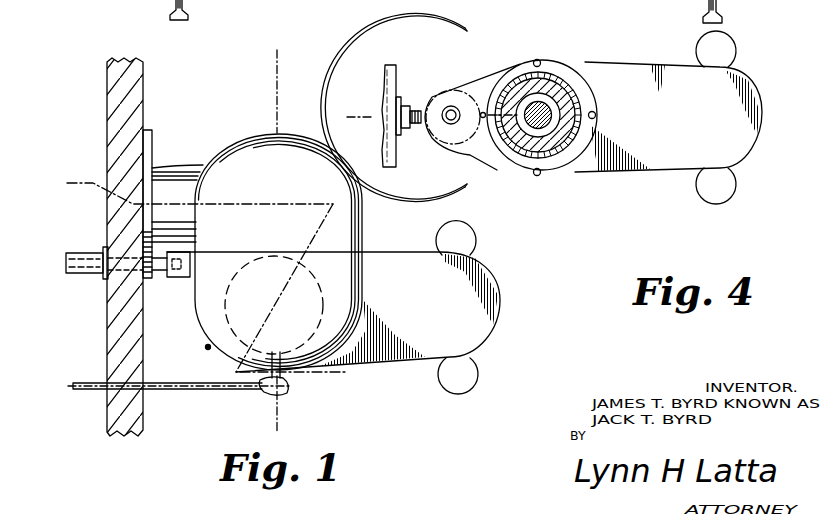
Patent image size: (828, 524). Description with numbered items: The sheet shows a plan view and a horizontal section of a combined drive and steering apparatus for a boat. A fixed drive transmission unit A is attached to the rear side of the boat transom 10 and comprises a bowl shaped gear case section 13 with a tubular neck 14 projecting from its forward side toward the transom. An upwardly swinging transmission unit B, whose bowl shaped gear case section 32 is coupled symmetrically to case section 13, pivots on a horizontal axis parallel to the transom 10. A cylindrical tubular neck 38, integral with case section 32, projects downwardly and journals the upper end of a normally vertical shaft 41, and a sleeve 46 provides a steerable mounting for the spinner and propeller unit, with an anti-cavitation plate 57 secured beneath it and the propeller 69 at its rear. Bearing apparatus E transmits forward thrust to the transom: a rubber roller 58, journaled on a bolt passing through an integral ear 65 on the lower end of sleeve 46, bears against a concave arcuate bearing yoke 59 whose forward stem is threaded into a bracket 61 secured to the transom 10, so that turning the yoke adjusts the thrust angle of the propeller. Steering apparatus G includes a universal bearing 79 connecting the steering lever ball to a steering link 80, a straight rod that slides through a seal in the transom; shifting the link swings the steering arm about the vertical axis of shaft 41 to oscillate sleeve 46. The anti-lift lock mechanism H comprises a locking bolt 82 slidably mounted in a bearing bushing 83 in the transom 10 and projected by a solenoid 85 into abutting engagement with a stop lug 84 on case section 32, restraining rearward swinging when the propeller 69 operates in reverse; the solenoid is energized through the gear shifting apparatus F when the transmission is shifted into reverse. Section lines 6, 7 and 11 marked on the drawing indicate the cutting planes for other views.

In FIG. 1, the boat transom 10 is at (139, 88).
In FIG. 4, the boat transom 10 is at (383, 79).
In FIG. 1, the section line 11- 11 is at (300, 77).
In FIG. 1, the section line 6- 6 is at (80, 190).
In FIG. 4, the section line 7- 7 is at (358, 93).
In FIG. 1, the gear case section 13 is at (362, 222).
In FIG. 1, the tubular neck 14 is at (177, 171).
In FIG. 1, the gear case section 32 is at (362, 296).
In FIG. 1, the anti-cavitation plate 57 is at (428, 358).
In FIG. 4, the anti-cavitation plate 57 is at (634, 66).
In FIG. 1, the propeller 69 is at (476, 243).
In FIG. 4, the propeller 69 is at (727, 52).
In FIG. 1, the universal bearing 79 is at (282, 396).
In FIG. 1, the steering link 80 is at (199, 390).
In FIG. 1, the locking bolt 82 is at (152, 282).
In FIG. 1, the bearing bushing 83 is at (127, 258).
In FIG. 1, the stop lug 84 is at (172, 277).
In FIG. 1, the solenoid 85 is at (95, 250).
In FIG. 4, the tubular neck 38 is at (526, 92).
In FIG. 4, the vertical shaft 41 is at (534, 127).
In FIG. 4, the sleeve 46 is at (562, 82).
In FIG. 4, the bearing roller 58 is at (440, 92).
In FIG. 4, the bearing yoke 59 is at (464, 42).
In FIG. 4, the bracket 61 is at (403, 103).
In FIG. 4, the integral ear 65 is at (459, 148).
In FIG. 1, the fixed unit A is at (240, 146).
In FIG. 1, the swinging transmission unit B is at (360, 315).
In FIG. 4, the bearing apparatus E is at (427, 54).
In FIG. 1, the gear shifting apparatus F is at (202, 345).
In FIG. 1, the steering apparatus G is at (233, 382).
In FIG. 1, the anti-lift lock mechanism H is at (96, 281).